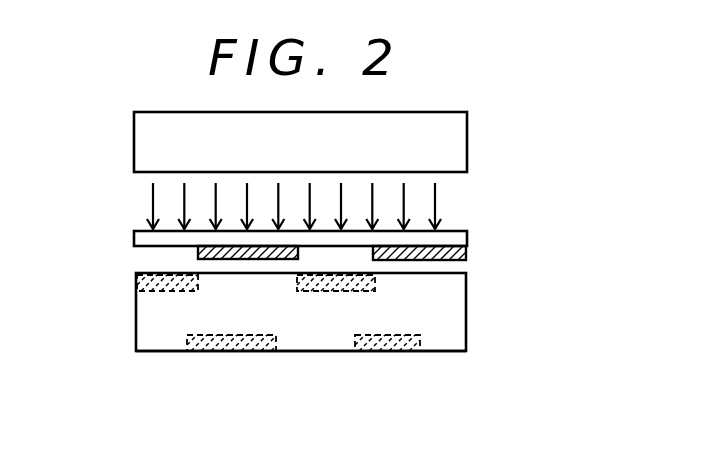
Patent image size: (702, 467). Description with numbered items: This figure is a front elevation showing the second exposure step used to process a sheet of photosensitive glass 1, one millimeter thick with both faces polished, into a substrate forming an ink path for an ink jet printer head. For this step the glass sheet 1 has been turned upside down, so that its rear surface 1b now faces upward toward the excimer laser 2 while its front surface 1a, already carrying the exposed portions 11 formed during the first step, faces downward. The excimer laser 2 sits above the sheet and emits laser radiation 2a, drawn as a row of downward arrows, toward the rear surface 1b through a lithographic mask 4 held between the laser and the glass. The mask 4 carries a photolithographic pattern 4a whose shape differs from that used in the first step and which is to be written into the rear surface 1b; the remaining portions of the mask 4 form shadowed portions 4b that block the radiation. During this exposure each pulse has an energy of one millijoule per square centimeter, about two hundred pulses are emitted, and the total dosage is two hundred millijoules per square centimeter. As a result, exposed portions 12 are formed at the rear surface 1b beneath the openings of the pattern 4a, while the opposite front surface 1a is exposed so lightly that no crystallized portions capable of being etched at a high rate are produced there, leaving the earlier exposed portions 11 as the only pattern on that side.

The sheet of photosensitive glass 1 is at (120, 320).
The front surface 1a is at (148, 351).
The rear surface 1b is at (137, 273).
The excimer laser 2 is at (468, 147).
The laser radiation 2a is at (450, 208).
The lithographic mask 4 is at (377, 278).
The photolithographic pattern 4a is at (367, 262).
The shadowed portions 4b is at (468, 254).
The exposed portions 11 is at (248, 352).
The exposed portions 12 is at (175, 292).